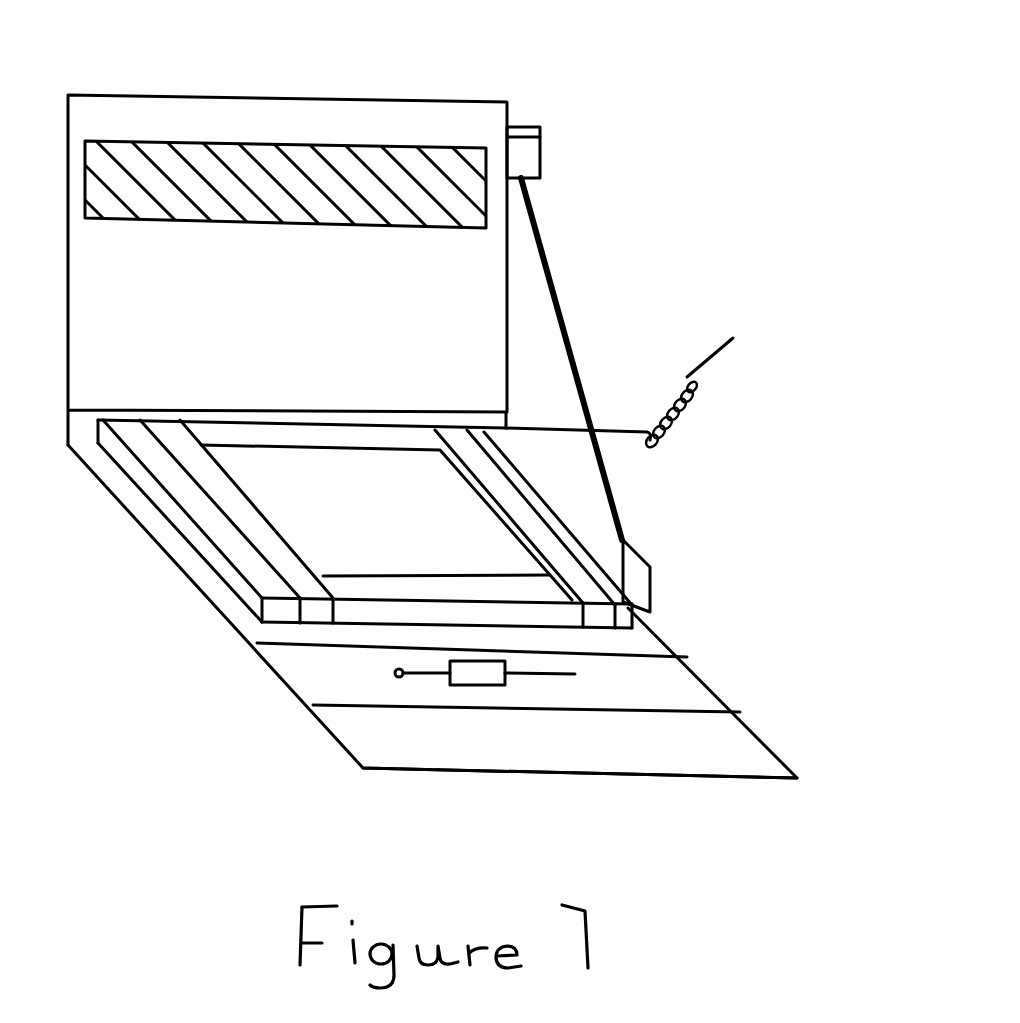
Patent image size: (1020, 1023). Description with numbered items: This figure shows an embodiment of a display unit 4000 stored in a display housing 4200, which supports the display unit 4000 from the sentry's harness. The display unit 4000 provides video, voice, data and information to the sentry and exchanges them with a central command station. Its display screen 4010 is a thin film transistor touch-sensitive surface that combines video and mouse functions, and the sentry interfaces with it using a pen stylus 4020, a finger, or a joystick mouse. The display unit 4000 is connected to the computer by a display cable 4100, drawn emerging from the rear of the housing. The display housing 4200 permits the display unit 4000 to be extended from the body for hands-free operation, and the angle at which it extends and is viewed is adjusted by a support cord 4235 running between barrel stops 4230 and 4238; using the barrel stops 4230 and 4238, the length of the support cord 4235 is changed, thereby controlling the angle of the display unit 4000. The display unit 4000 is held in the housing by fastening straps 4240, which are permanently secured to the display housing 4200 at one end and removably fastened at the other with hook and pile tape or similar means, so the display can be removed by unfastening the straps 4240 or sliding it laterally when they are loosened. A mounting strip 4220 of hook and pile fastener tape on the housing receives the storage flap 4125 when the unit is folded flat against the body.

The display unit 4000 is at (165, 515).
The display screen 4010 is at (347, 450).
The pen stylus 4020 is at (530, 675).
The display cable 4100 is at (673, 417).
The storage flap 4125 is at (330, 733).
The display housing 4200 is at (382, 97).
The mounting strip 4220 is at (217, 227).
The barrel stop 4230 is at (540, 148).
The support cord 4235 is at (560, 292).
The barrel stop 4238 is at (650, 578).
The fastening straps 4240 is at (260, 533).